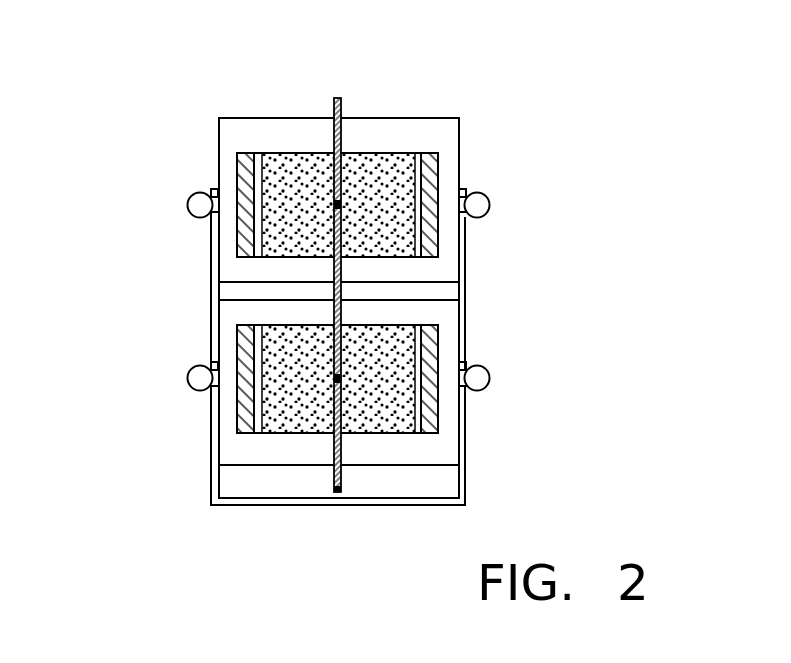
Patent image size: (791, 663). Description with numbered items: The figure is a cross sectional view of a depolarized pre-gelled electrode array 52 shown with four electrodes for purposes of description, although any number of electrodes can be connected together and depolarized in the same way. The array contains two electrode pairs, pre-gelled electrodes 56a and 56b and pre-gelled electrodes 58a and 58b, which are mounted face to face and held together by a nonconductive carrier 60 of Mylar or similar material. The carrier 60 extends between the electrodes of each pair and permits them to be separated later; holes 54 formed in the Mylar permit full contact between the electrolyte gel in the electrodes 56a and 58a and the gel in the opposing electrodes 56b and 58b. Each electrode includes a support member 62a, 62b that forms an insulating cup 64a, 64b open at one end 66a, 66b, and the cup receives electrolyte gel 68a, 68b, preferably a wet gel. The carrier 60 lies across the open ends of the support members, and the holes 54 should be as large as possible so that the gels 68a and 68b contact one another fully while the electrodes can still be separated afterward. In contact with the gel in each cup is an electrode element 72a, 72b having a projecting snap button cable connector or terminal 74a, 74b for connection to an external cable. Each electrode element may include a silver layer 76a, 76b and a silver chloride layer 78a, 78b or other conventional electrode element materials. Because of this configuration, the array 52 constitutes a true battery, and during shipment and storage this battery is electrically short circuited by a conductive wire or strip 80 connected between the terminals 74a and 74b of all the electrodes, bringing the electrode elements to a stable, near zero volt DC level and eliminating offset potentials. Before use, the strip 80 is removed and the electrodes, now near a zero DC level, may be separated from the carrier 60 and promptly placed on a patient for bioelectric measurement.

The electrode array 52 is at (589, 336).
The holes 54 is at (333, 217).
The pre-gelled electrode 56a is at (255, 440).
The pre-gelled electrode 56b is at (437, 347).
The pre-gelled electrode 58a is at (287, 118).
The pre-gelled electrode 58b is at (459, 148).
The nonconductive carrier 60 is at (341, 452).
The support member 62a is at (233, 268).
The support member 62b is at (472, 270).
The insulating cup 64a is at (250, 157).
The insulating cup 64b is at (440, 155).
The open end 66a is at (323, 413).
The open end 66b is at (447, 268).
The electrolyte gel 68a is at (320, 157).
The electrolyte gel 68b is at (367, 165).
The electrode element 72a is at (242, 405).
The electrode element 72b is at (438, 170).
The snap button cable connector 74a is at (188, 201).
The snap button cable connector 74b is at (487, 197).
The silver layer 76a is at (246, 233).
The silver layer 76b is at (348, 250).
The silver chloride layer 78a is at (258, 165).
The silver chloride layer 78b is at (412, 178).
The conductive wire or strip 80 is at (467, 507).